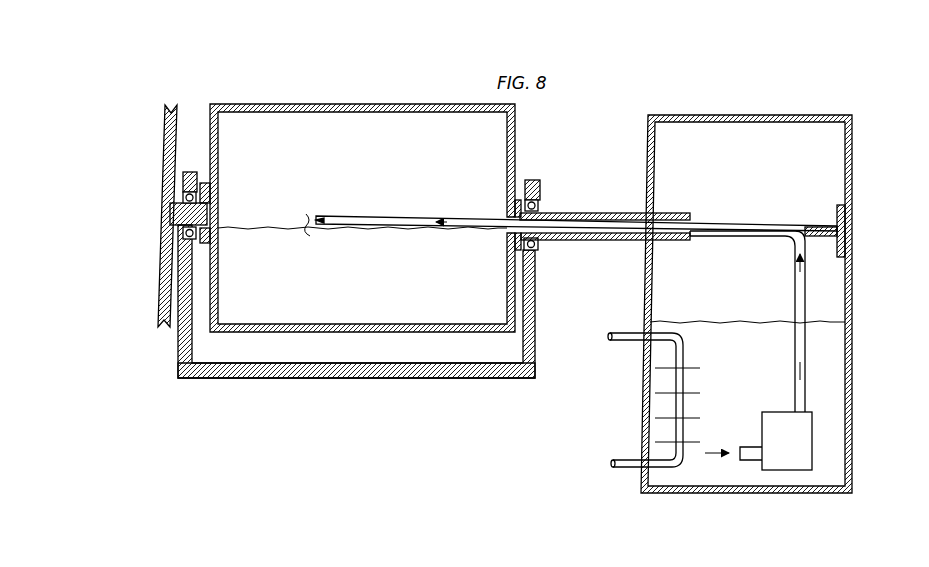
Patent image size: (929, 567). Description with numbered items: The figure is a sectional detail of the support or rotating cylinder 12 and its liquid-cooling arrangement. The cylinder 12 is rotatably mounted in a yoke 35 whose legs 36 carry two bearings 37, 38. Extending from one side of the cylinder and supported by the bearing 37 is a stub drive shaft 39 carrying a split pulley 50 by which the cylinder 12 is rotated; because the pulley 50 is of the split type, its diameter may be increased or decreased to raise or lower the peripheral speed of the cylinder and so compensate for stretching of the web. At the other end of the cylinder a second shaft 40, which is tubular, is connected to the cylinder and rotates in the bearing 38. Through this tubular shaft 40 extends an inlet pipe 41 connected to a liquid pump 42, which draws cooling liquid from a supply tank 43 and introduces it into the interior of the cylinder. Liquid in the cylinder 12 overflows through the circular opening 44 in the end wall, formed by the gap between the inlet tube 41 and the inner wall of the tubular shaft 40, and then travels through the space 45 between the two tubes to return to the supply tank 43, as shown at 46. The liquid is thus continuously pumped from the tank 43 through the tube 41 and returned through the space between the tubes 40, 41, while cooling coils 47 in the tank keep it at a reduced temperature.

The support or rotating cylinder 12 is at (333, 130).
The yoke 35 is at (381, 384).
The legs 36 is at (540, 322).
The bearing 37 is at (189, 182).
The bearing 38 is at (534, 192).
The stub drive shaft 39 is at (198, 206).
The second shaft 40 is at (553, 212).
The inlet pipe 41 is at (381, 215).
The liquid pump 42 is at (771, 416).
The supply tank 43 is at (850, 344).
The circular opening 44 is at (506, 230).
The space 45 is at (588, 220).
The return point 46 is at (688, 234).
The cooling coils 47 is at (610, 347).
The split pulley 50 is at (163, 328).